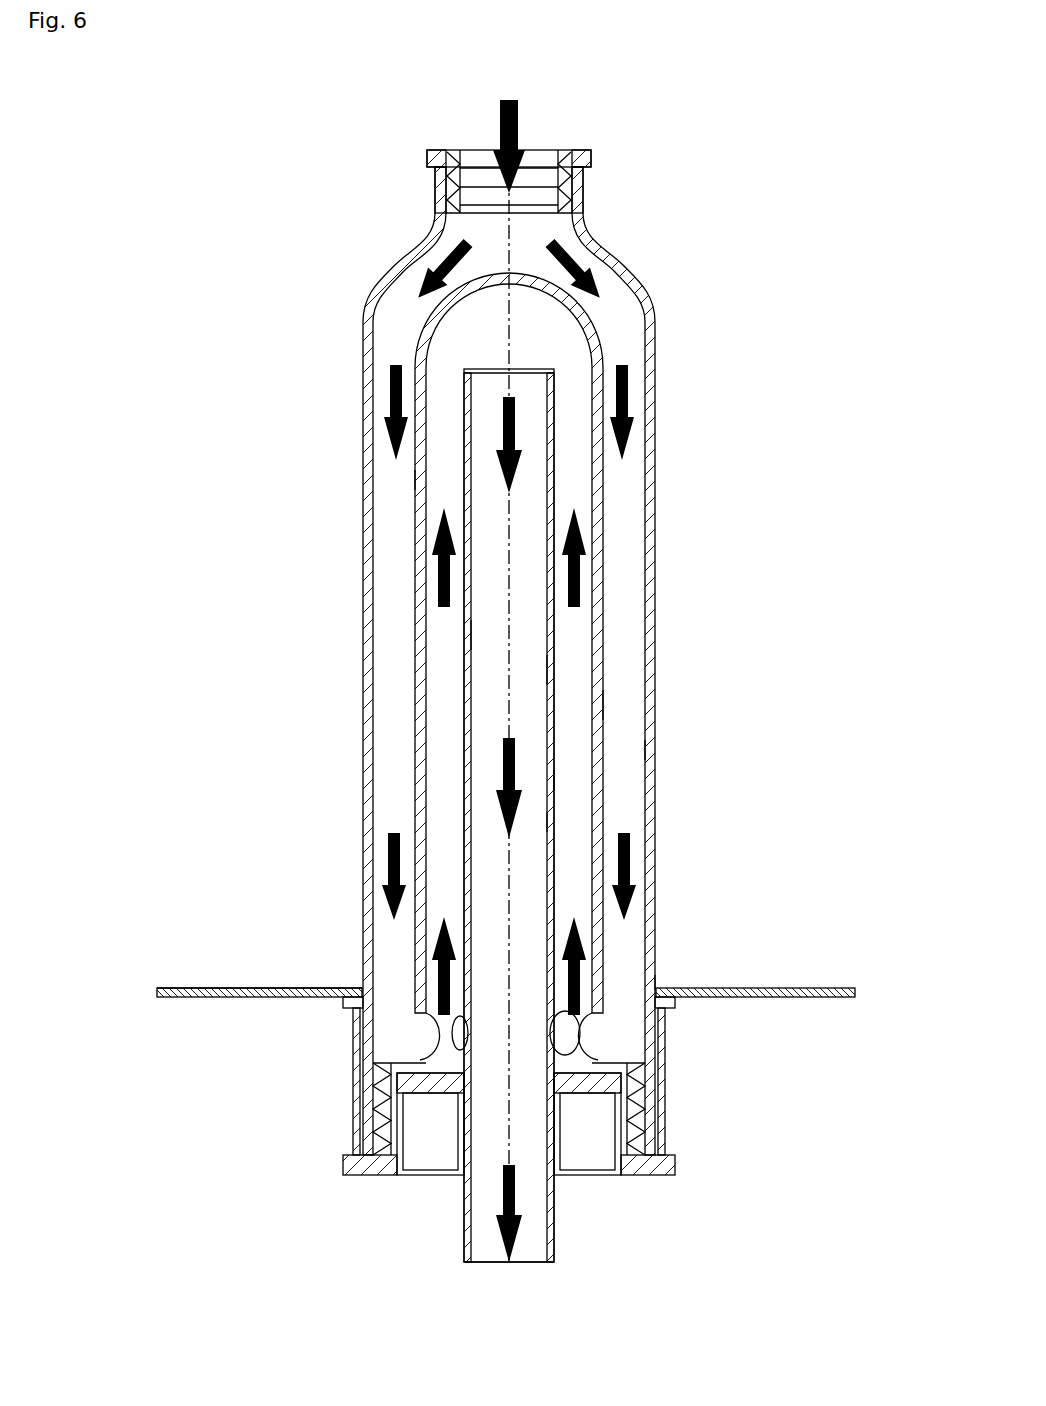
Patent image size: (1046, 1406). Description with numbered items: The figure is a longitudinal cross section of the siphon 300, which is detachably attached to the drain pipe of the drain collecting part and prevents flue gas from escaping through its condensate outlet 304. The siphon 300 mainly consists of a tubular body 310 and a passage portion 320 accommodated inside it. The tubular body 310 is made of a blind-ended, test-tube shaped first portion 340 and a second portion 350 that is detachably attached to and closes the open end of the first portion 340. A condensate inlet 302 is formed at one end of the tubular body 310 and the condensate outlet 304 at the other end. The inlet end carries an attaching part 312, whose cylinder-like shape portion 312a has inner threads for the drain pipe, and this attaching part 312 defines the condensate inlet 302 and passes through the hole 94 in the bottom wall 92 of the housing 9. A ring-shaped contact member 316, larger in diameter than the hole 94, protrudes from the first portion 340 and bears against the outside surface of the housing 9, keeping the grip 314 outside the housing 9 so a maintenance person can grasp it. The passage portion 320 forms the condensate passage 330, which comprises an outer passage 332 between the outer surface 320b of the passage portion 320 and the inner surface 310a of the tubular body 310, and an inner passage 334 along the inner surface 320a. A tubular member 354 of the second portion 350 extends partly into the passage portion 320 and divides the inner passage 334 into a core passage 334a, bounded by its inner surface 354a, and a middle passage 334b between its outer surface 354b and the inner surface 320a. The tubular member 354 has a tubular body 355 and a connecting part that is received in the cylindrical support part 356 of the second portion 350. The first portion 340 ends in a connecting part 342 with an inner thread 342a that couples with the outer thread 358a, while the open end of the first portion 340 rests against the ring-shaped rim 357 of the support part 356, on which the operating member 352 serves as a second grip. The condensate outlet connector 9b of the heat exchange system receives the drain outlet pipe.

The siphon 300 is at (714, 190).
The condensate inlet 302 is at (532, 150).
The condensate outlet 304 is at (537, 1262).
The tubular body 310 is at (810, 1010).
The inner surface of the tubular body 310a is at (628, 750).
The attaching part 312 is at (470, 148).
The cylinder-like shape portion 312a is at (433, 190).
The grip 314 is at (350, 1095).
The contact member 316 is at (657, 990).
The passage portion 320 is at (612, 582).
The inner surface of the passage portion 320a is at (600, 790).
The outer surface of the passage portion 320b is at (608, 830).
The passage 330 is at (822, 620).
The outer passage 332 is at (614, 706).
The inner passage 334 is at (822, 661).
The core passage 334a is at (514, 637).
The middle passage 334b is at (580, 668).
The first portion 340 is at (666, 880).
The connecting part 342 is at (343, 1154).
The inner thread 342a is at (395, 1128).
The second portion 350 is at (682, 1147).
The operating member 352 is at (677, 1167).
The tubular member 354 is at (562, 490).
The inner surface of the tubular member 354a is at (472, 692).
The outer surface of the tubular member 354b is at (432, 745).
The tubular body of the tubular member 355 is at (457, 476).
The support part 356 is at (647, 1182).
The rim 357 is at (662, 1186).
The outer thread 358a is at (368, 1063).
The housing 9 is at (198, 975).
The bottom wall 92 is at (253, 988).
The hole 94 is at (362, 988).
The condensate outlet connector 9b is at (464, 1225).